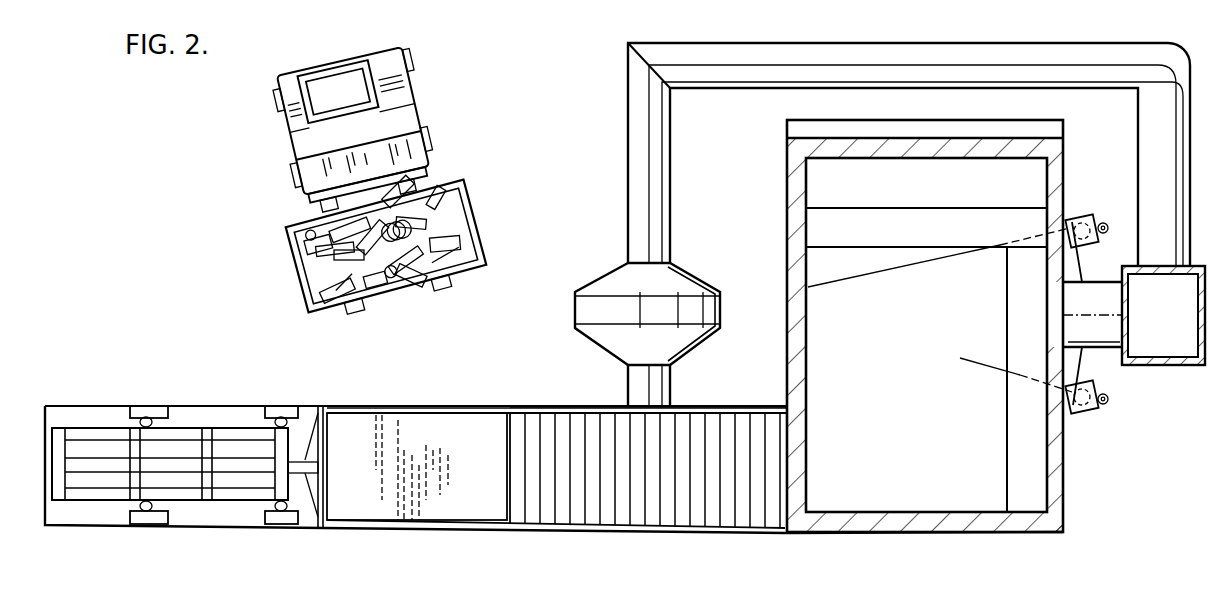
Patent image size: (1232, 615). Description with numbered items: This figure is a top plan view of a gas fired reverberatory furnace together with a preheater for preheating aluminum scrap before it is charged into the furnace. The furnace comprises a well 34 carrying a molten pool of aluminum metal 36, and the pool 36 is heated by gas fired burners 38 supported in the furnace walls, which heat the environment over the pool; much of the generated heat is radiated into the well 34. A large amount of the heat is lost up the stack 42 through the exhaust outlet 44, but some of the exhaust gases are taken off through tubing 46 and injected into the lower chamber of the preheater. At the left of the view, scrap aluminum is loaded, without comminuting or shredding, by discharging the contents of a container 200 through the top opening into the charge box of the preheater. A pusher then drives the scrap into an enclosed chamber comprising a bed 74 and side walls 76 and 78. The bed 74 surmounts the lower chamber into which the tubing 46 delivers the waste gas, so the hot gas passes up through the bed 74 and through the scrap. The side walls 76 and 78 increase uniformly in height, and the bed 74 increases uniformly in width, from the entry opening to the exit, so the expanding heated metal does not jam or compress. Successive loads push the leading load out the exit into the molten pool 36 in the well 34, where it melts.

The container 200 is at (478, 230).
The tubing 46 is at (1190, 94).
The stack 42 is at (1205, 266).
The exhaust outlet 44 is at (1100, 334).
The gas fired burners 38 is at (1072, 215).
The molten metal pool 36 is at (907, 436).
The well 34 is at (1052, 545).
The bed 74 is at (580, 465).
The side wall 76 is at (523, 413).
The side wall 78 is at (557, 527).